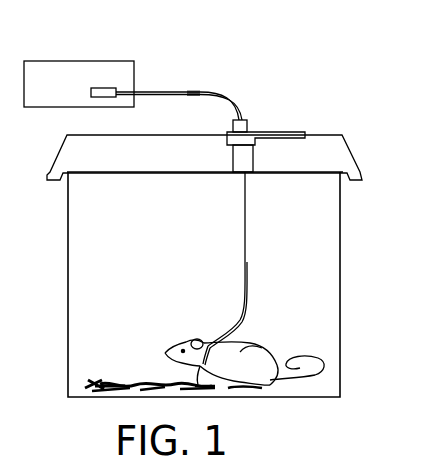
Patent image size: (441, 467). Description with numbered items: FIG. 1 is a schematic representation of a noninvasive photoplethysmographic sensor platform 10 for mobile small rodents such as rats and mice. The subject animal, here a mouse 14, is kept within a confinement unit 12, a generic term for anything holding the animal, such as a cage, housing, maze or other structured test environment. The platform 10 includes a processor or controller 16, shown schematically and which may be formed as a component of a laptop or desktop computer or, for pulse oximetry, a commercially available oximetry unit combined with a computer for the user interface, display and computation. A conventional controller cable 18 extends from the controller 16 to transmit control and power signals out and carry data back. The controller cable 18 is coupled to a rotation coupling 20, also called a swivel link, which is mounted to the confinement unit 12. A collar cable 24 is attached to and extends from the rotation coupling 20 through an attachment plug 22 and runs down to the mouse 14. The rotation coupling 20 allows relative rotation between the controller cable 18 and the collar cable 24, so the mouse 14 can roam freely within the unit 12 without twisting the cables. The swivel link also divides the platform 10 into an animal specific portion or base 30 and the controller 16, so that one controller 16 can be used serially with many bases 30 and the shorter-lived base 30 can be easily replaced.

The noninvasive photoplethysmographic sensor platform 10 is at (367, 259).
The confinement unit 12 is at (340, 332).
The mouse 14 is at (240, 356).
The controller 16 is at (118, 70).
The controller cable 18 is at (206, 90).
The rotation coupling 20 is at (245, 132).
The attachment plug 22 is at (243, 160).
The collar cable 24 is at (245, 267).
The animal specific portion or base 30 is at (207, 340).